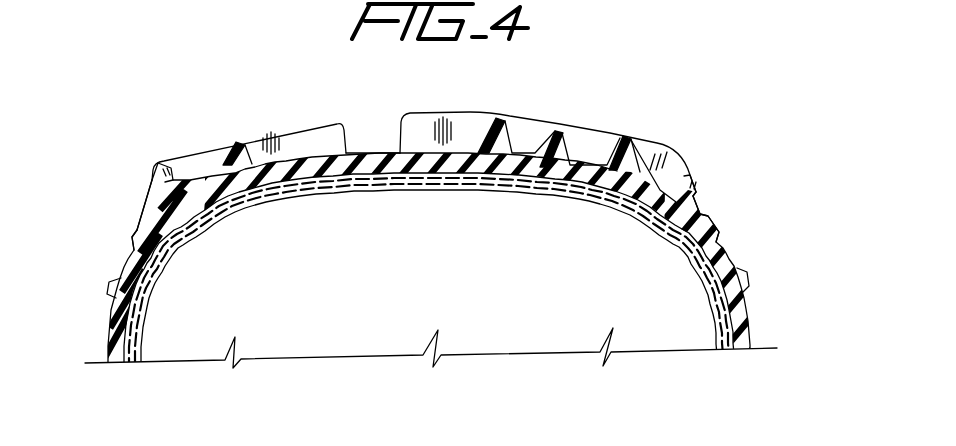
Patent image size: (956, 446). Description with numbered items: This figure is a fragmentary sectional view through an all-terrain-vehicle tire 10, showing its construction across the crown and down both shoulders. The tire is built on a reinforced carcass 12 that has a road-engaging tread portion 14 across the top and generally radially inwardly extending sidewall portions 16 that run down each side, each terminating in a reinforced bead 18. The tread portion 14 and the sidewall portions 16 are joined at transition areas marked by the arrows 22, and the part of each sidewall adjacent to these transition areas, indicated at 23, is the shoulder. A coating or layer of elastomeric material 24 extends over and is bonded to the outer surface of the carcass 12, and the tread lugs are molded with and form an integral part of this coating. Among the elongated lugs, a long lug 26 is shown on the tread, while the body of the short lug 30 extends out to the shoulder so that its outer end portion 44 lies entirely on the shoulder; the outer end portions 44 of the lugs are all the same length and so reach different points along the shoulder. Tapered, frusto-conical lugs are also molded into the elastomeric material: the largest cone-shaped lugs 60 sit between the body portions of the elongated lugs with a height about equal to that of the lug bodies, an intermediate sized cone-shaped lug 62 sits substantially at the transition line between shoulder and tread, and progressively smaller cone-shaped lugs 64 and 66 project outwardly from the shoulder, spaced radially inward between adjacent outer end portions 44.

The tire 10 is at (646, 105).
The reinforced carcass 12 is at (384, 199).
The tread portion 14 is at (376, 143).
The sidewall portions 16 is at (110, 337).
The reinforced bead 18 is at (592, 201).
The transition areas 22 is at (199, 240).
The shoulder 23 is at (140, 133).
The elastomeric material coating 24 is at (435, 174).
The long lug 26 is at (527, 120).
The short lug 30 is at (316, 124).
The outer end portion 44 is at (147, 197).
The cone-shaped lug 60 is at (238, 143).
The intermediate sized cone-shaped lug 62 is at (160, 173).
The cone-shaped lug 64 is at (133, 233).
The cone-shaped lug 66 is at (118, 292).